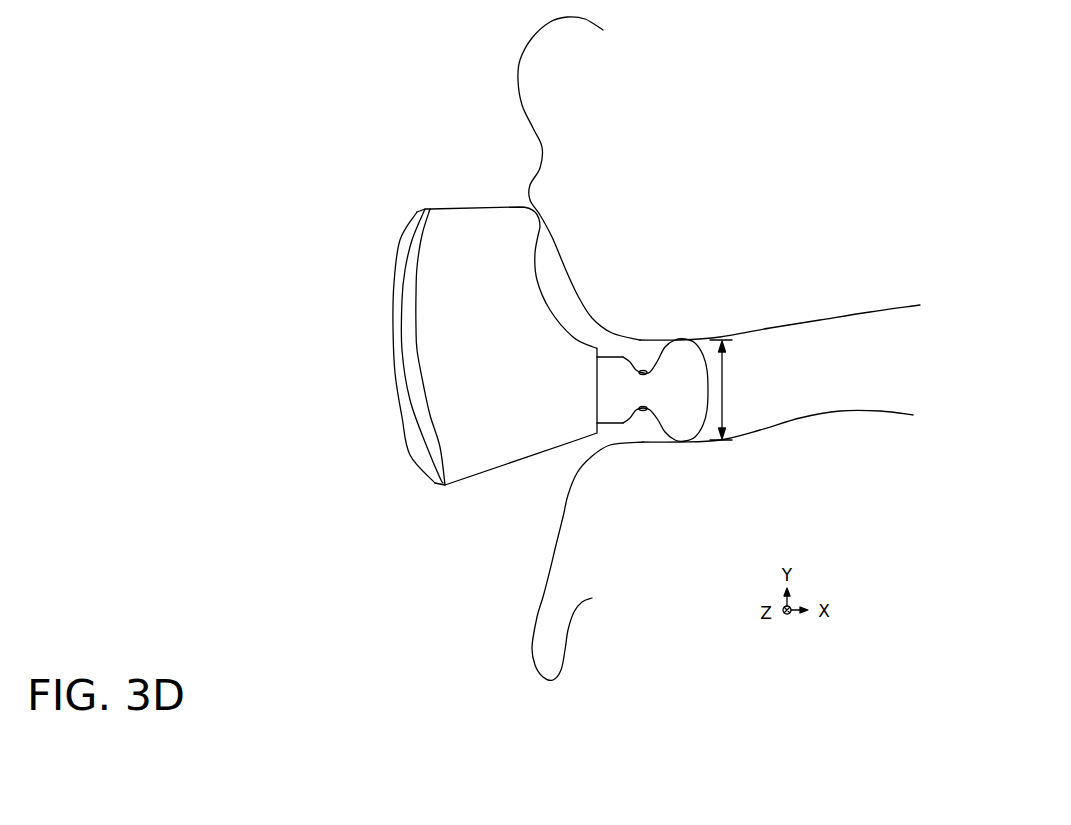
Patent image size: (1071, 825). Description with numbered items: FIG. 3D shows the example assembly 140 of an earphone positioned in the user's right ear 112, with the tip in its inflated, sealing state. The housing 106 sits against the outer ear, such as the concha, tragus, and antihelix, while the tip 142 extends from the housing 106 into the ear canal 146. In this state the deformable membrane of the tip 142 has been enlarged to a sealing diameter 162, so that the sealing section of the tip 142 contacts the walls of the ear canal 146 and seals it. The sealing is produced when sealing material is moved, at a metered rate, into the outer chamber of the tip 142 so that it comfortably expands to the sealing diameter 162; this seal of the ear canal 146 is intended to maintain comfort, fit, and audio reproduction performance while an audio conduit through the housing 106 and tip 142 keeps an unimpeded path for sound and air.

The housing 106 is at (514, 382).
The right ear 112 is at (586, 76).
The assembly 140 is at (720, 349).
The tip 142 is at (680, 399).
The ear canal 146 is at (842, 407).
The sealing diameter 162 is at (737, 390).